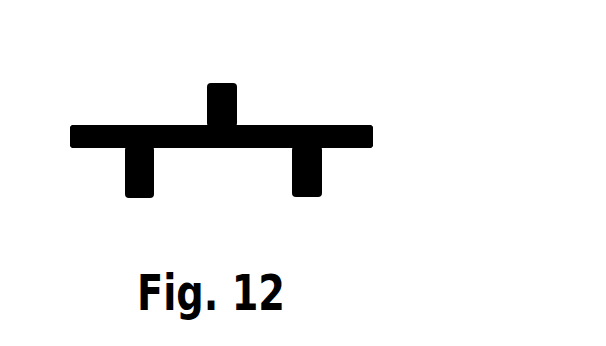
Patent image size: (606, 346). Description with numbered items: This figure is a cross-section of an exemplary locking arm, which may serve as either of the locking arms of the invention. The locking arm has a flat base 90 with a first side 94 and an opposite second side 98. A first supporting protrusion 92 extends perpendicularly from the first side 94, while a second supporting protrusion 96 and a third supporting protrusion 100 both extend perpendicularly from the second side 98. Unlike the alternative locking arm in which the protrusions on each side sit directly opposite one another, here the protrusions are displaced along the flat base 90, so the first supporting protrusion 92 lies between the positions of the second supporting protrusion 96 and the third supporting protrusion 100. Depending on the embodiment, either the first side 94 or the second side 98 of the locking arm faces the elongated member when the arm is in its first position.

The flat base 90 is at (352, 147).
The first supporting protrusion 92 is at (213, 83).
The first side 94 is at (272, 125).
The second supporting protrusion 96 is at (127, 178).
The second side 98 is at (182, 148).
The third supporting protrusion 100 is at (302, 197).